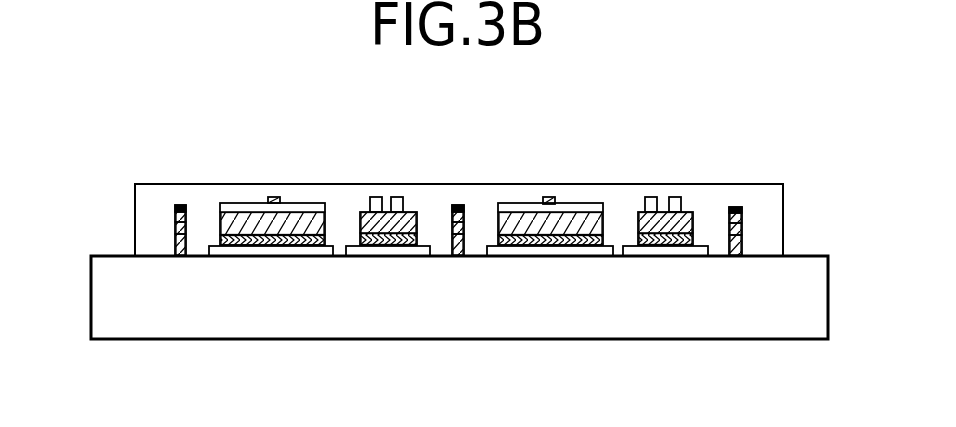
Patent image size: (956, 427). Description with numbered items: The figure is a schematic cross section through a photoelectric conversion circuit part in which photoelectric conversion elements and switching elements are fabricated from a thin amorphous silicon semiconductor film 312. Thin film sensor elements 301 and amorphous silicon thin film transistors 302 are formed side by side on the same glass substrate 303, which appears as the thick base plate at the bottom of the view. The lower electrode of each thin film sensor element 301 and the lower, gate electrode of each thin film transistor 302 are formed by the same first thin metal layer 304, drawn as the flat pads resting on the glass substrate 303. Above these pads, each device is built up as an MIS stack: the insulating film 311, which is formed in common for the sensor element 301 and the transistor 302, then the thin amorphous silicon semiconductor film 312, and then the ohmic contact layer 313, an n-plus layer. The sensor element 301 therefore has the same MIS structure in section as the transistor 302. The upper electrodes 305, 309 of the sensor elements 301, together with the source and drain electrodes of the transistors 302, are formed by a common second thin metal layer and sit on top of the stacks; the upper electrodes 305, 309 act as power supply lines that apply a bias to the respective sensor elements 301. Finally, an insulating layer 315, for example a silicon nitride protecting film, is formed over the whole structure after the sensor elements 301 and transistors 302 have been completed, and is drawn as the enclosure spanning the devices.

The thin film sensor element 301 is at (612, 263).
The thin film transistor 302 is at (707, 263).
The glass substrate 303 is at (753, 327).
The first thin metal layer 304 is at (347, 256).
The upper electrode 305 is at (182, 206).
The upper electrode 309 is at (273, 198).
The insulating film 311 is at (490, 244).
The thin amorphous silicon semiconductor film 312 is at (175, 232).
The ohmic contact layer 313 is at (175, 213).
The insulating layer 315 is at (146, 188).